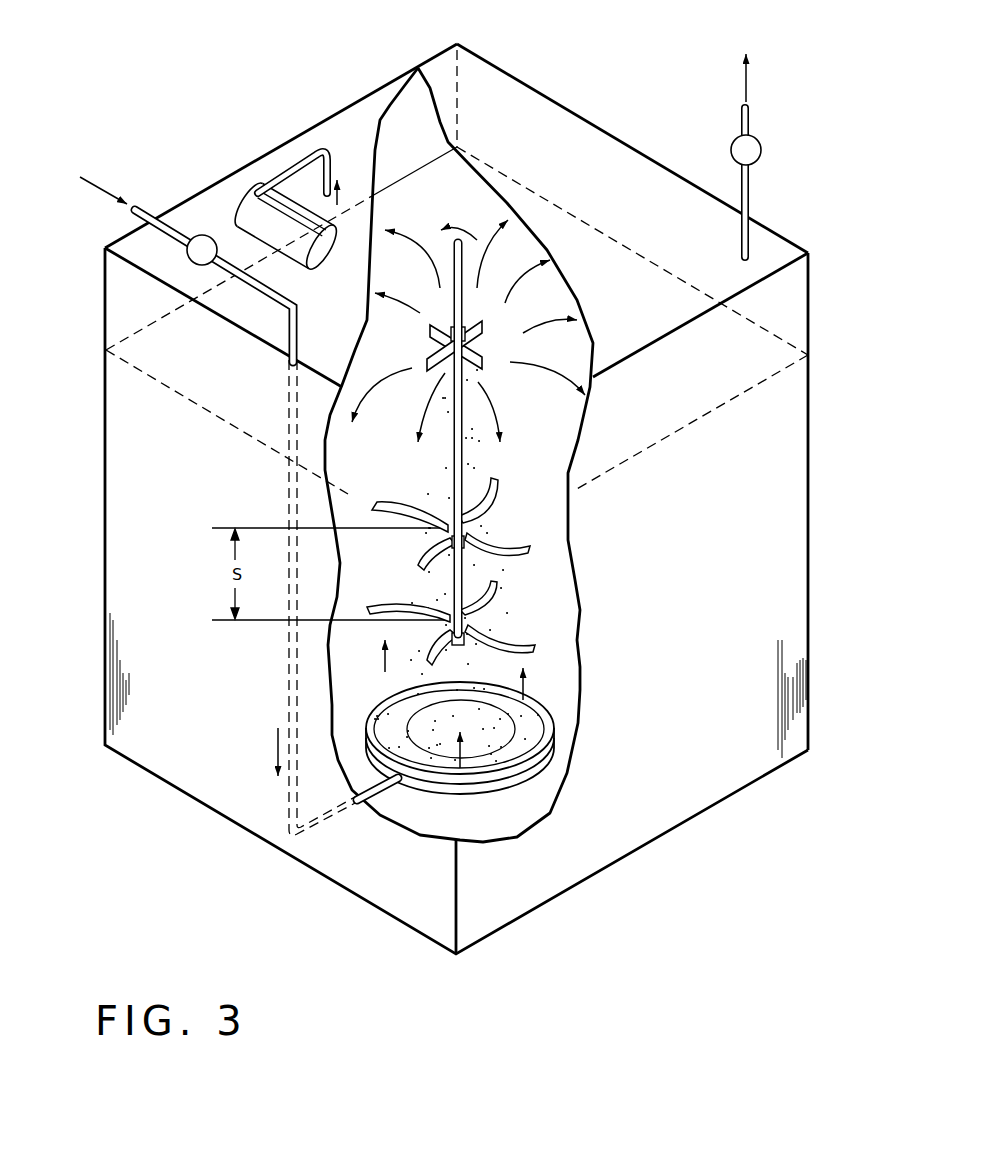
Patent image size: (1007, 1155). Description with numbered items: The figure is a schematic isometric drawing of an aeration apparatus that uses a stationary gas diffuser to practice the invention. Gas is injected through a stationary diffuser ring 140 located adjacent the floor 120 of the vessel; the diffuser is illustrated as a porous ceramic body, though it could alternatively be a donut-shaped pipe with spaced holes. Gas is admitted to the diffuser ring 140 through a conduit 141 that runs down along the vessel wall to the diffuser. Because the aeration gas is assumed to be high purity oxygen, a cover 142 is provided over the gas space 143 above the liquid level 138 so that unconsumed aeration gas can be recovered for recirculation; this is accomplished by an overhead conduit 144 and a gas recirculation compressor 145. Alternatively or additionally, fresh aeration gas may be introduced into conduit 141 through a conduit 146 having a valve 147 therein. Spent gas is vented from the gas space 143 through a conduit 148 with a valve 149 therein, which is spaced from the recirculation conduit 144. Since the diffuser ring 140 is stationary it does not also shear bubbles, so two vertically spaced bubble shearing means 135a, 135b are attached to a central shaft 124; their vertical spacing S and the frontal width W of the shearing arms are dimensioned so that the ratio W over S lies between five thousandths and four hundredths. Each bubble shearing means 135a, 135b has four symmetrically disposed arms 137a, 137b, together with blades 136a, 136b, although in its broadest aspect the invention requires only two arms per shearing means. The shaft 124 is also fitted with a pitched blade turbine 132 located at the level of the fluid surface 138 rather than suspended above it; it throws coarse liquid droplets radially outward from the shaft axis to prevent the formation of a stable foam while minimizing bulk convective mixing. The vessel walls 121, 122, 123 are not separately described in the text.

The floor 120 is at (628, 832).
The side wall 121 is at (802, 520).
The top wall 122 is at (268, 150).
The top edge 123 is at (595, 123).
The shaft 124 is at (452, 467).
The pitched blade turbine 132 is at (497, 353).
The bubble shearing means 135a is at (456, 631).
The bubble shearing means 135b is at (468, 516).
The impeller blade 136a is at (447, 613).
The impeller blade 136b is at (500, 483).
The arms 137a is at (494, 620).
The arms 137b is at (495, 537).
The liquid level 138 is at (782, 372).
The stationary diffuser ring 140 is at (553, 724).
The conduit 141 is at (290, 673).
The cover 142 is at (510, 85).
The gas space 143 is at (797, 345).
The overhead conduit 144 is at (330, 166).
The gas recirculation compressor 145 is at (250, 205).
The conduit 146 is at (249, 292).
The valve 147 is at (202, 235).
The conduit 148 is at (752, 203).
The valve 149 is at (762, 152).